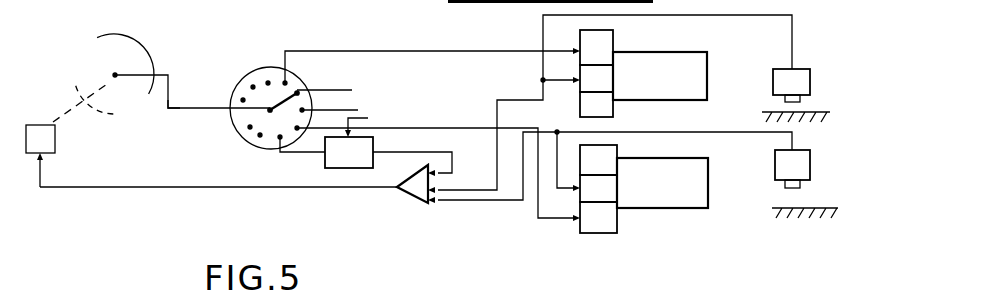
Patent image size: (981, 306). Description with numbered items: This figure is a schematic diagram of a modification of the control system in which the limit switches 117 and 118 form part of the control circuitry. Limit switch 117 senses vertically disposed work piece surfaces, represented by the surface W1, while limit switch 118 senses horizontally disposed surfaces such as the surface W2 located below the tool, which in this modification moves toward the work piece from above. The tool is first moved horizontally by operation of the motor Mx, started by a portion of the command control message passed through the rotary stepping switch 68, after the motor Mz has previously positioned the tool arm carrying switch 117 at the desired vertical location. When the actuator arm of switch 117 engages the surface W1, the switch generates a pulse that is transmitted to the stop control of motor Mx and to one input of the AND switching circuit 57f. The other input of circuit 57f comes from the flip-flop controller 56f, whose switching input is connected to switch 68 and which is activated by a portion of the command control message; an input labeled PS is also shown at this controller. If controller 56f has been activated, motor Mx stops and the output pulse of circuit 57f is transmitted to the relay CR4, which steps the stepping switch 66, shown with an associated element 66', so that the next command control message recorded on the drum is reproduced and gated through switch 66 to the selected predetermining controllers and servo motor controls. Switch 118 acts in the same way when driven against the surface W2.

The stepping switch 66 is at (161, 63).
The cam follower link 66' is at (187, 124).
The rotary stepping switch 68 is at (250, 78).
The relay CR4 is at (55, 151).
The pulse source PS is at (374, 118).
The flip-flop controller 56f is at (332, 168).
The AND switching circuit 57f is at (408, 188).
The motor Mx is at (643, 75).
The motor Mz is at (644, 190).
The limit switch 117 is at (805, 72).
The limit switch 118 is at (805, 153).
The vertical surface of the work piece W1 is at (818, 122).
The horizontal surface of the work piece W2 is at (825, 210).